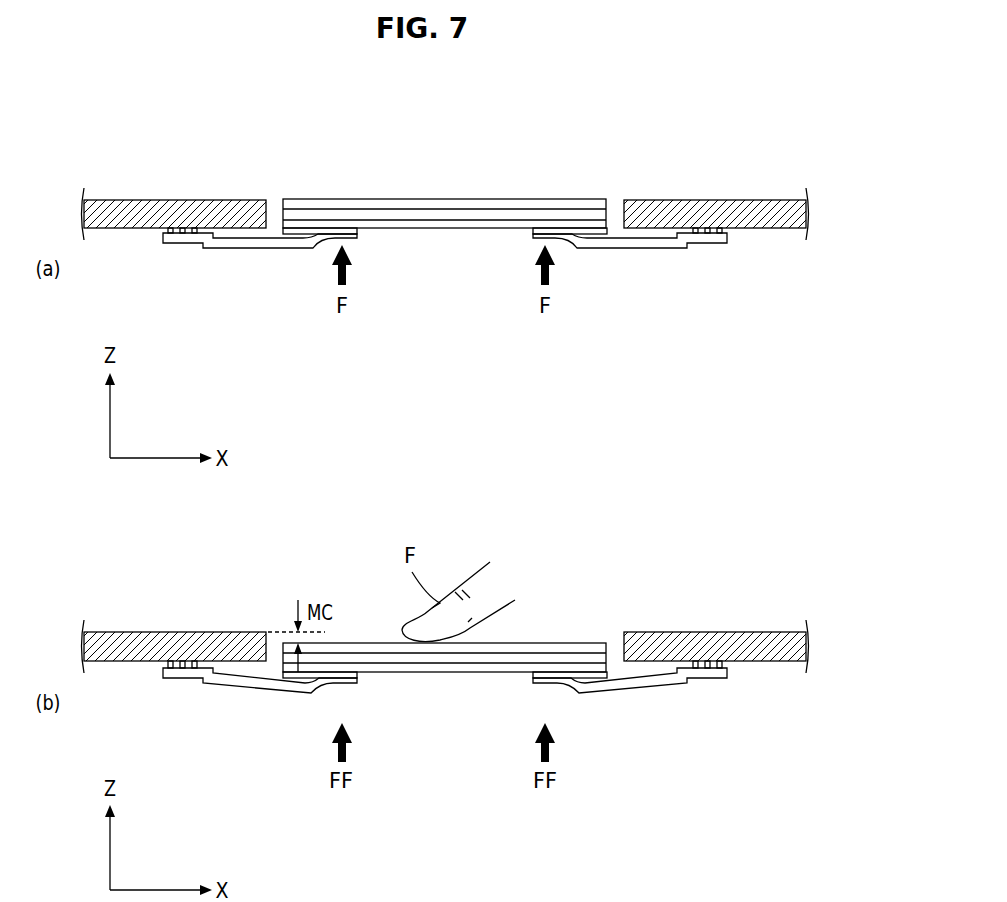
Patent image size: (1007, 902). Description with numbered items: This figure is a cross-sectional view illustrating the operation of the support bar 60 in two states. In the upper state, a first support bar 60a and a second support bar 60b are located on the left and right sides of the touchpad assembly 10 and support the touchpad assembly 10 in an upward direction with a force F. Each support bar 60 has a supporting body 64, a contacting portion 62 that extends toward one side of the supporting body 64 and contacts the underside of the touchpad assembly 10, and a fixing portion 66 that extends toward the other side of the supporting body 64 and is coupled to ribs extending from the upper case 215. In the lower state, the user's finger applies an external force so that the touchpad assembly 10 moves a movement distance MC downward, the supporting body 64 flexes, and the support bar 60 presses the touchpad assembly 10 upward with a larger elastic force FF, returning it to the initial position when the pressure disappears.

The upper case 215 is at (158, 202).
The touchpad assembly 10 is at (419, 180).
The support bar 60 is at (235, 359).
The first support bar 60a is at (260, 272).
The second support bar 60b is at (629, 458).
The contacting portion 62 is at (545, 232).
The supporting body 64 is at (639, 248).
The fixing portion 66 is at (700, 236).